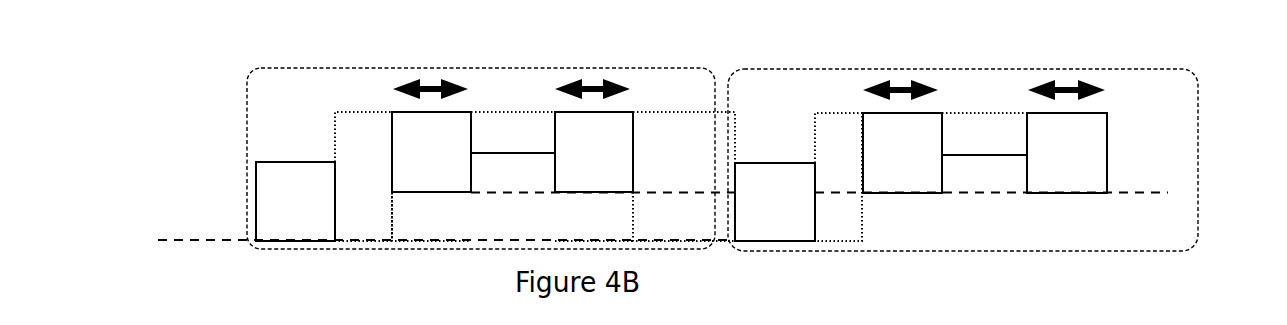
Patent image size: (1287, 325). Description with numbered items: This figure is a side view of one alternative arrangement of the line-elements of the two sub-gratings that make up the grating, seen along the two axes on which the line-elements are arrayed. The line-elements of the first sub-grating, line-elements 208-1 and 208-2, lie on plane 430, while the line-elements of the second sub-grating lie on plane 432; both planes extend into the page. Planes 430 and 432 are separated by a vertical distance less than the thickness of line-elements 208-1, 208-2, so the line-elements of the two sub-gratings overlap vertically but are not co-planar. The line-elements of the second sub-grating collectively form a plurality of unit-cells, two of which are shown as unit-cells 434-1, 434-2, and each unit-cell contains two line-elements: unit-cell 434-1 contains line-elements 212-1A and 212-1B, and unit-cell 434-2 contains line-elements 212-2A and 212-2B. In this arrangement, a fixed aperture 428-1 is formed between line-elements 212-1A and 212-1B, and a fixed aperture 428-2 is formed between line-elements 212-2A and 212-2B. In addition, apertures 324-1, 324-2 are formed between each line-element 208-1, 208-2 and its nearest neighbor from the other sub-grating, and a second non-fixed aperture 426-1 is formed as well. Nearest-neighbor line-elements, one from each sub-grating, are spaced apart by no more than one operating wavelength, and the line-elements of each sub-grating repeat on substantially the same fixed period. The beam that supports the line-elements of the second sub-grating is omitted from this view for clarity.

The line-element 208-1 is at (322, 232).
The line-element 208-2 is at (808, 236).
The line-element 212-1A is at (466, 186).
The line-element 212-1B is at (629, 186).
The line-element 212-2A is at (937, 186).
The line-element 212-2B is at (1101, 186).
The aperture 324-1 is at (361, 163).
The aperture 324-2 is at (840, 155).
The second non-fixed aperture 426-1 is at (673, 150).
The fixed aperture 428-1 is at (517, 123).
The fixed aperture 428-2 is at (985, 123).
The plane 430 is at (175, 246).
The plane 432 is at (1150, 195).
The unit-cell 434-1 is at (548, 68).
The unit-cell 434-2 is at (1008, 70).